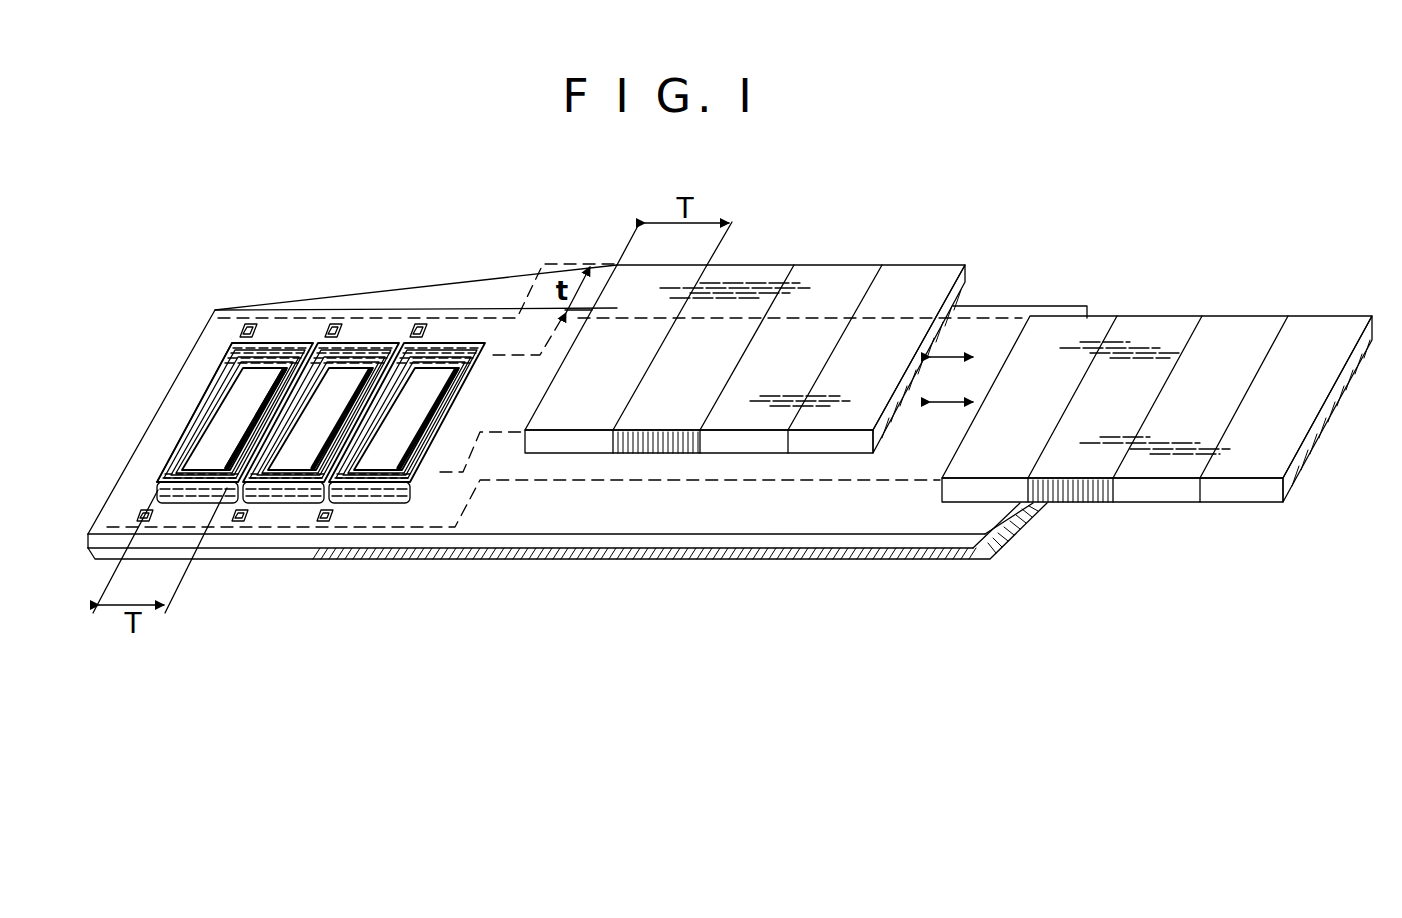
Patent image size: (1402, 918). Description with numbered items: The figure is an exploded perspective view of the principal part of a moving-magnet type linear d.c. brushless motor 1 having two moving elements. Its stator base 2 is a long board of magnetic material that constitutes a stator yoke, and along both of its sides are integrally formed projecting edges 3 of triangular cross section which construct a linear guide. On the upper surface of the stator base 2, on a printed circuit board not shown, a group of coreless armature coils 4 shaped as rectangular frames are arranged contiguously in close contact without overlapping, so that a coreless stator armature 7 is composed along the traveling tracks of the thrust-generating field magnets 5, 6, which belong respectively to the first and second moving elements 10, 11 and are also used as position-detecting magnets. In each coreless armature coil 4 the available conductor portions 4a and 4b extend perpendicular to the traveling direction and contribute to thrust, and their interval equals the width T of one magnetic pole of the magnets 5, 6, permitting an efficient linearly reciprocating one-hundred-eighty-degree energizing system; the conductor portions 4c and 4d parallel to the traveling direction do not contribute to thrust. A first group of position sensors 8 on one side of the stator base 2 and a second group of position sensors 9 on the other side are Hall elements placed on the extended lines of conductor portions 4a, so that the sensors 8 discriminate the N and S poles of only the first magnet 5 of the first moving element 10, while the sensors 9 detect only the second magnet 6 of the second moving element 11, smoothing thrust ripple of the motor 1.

The moving-magnet type linear d.c. brushless motor 1 is at (1022, 280).
The stator base 2 is at (815, 518).
The projecting edges 3 is at (937, 552).
The coreless armature coils 4 is at (293, 337).
The available conductor portion 4a is at (202, 405).
The available conductor portion 4b is at (266, 466).
The conductor portion 4c is at (272, 350).
The conductor portion 4d is at (205, 488).
The thrust-generating field magnet-cum-position-detecting magnet 5 is at (760, 268).
The thrust-generating field magnet-cum-position-detecting magnet 6 is at (1153, 337).
The coreless stator armature 7 is at (448, 306).
The first group of position sensors 8 is at (248, 322).
The second group of position sensors 9 is at (138, 512).
The first moving element 10 is at (900, 258).
The second moving element 11 is at (1222, 312).